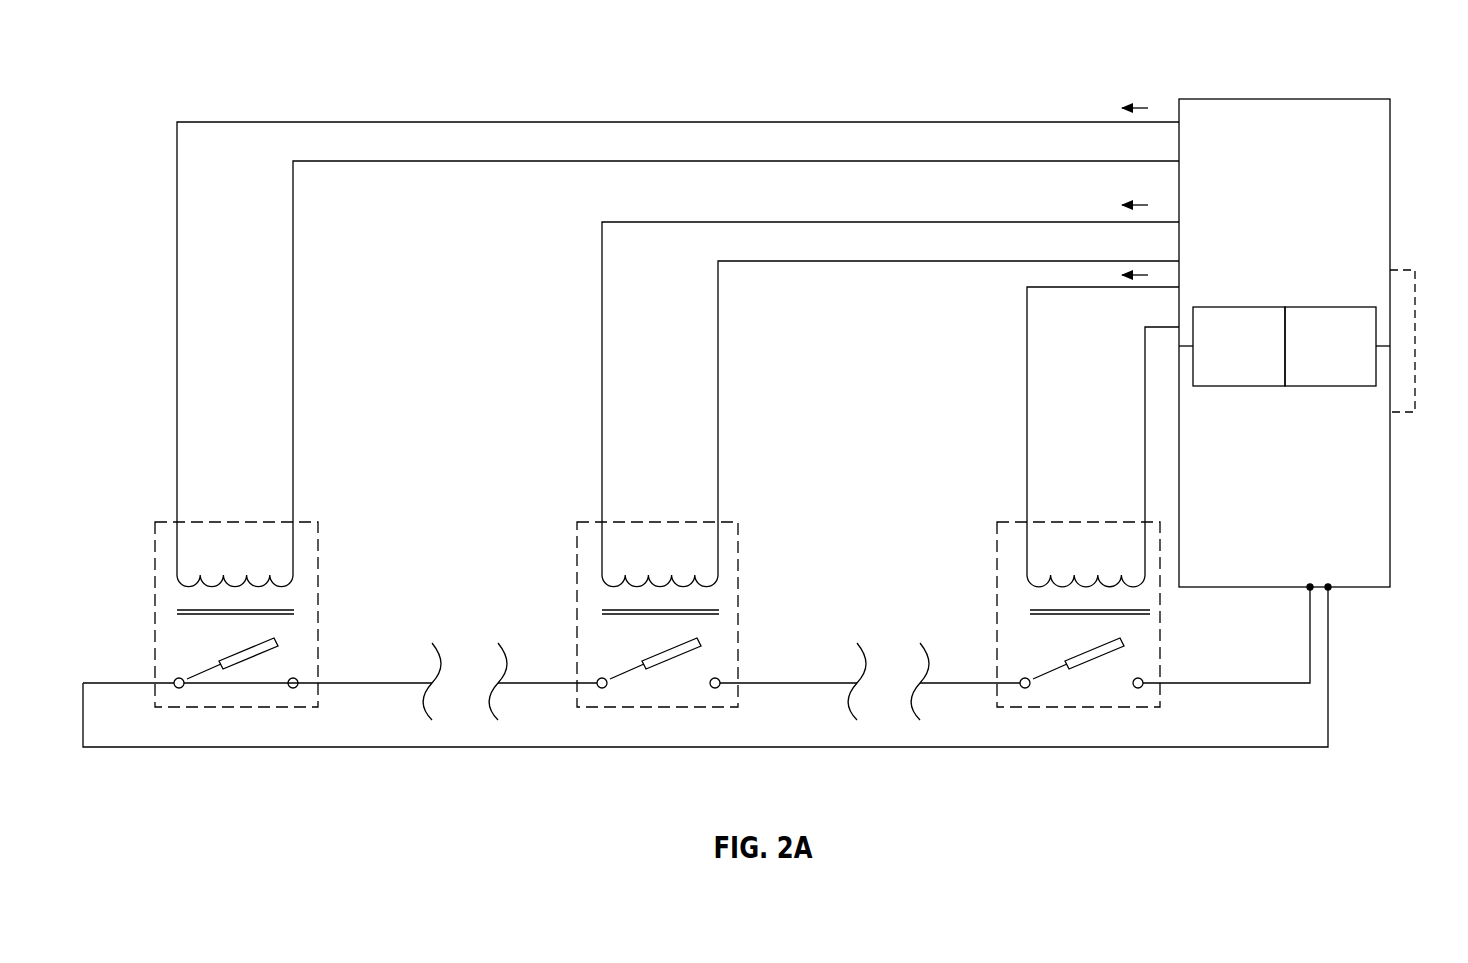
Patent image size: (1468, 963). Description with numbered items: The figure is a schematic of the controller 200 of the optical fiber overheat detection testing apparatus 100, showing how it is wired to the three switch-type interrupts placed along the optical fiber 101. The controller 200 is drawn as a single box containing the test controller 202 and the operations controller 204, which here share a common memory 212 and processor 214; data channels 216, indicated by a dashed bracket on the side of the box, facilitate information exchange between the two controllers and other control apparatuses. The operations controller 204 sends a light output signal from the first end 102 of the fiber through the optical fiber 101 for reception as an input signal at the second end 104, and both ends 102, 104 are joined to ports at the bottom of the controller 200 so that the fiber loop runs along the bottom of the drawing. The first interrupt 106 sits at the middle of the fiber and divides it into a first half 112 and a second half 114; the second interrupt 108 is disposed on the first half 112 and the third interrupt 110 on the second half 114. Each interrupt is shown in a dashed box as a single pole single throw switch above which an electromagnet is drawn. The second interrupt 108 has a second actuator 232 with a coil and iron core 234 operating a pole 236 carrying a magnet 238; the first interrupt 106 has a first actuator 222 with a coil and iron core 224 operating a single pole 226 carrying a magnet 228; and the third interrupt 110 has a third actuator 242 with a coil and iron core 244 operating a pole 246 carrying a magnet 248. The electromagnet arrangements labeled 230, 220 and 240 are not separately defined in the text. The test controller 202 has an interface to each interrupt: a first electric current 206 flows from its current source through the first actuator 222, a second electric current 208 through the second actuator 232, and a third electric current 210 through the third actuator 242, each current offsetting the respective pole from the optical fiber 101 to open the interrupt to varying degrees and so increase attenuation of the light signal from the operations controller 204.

The optical fiber overheat detection testing apparatus 100 is at (661, 780).
The optical fiber 101 is at (822, 758).
The first end 102 is at (1332, 595).
The second end 104 is at (1307, 595).
The first interrupt 106 is at (657, 597).
The second interrupt 108 is at (235, 597).
The third interrupt 110 is at (1043, 598).
The first half 112 is at (253, 748).
The second half 114 is at (1190, 683).
The controller 200 is at (1245, 96).
The test controller 202 is at (1313, 116).
The operations controller 204 is at (1373, 490).
The first electric current 206 is at (1130, 203).
The second electric current 208 is at (1130, 106).
The third electric current 210 is at (1128, 277).
The memory 212 is at (1197, 307).
The processor 214 is at (1293, 307).
The data channels 216 is at (1408, 272).
The second relay coil assembly 220 is at (726, 596).
The first actuator 222 is at (641, 576).
The iron core 224 is at (601, 613).
The single pole 226 is at (619, 686).
The magnet 228 is at (700, 644).
The first relay coil assembly 230 is at (298, 596).
The second actuator 232 is at (216, 576).
The iron core 234 is at (176, 613).
The pole 236 is at (193, 686).
The magnet 238 is at (277, 644).
The third relay coil assembly 240 is at (1010, 602).
The third actuator 242 is at (1064, 576).
The iron core 244 is at (1030, 613).
The pole 246 is at (1042, 686).
The magnet 248 is at (1094, 658).